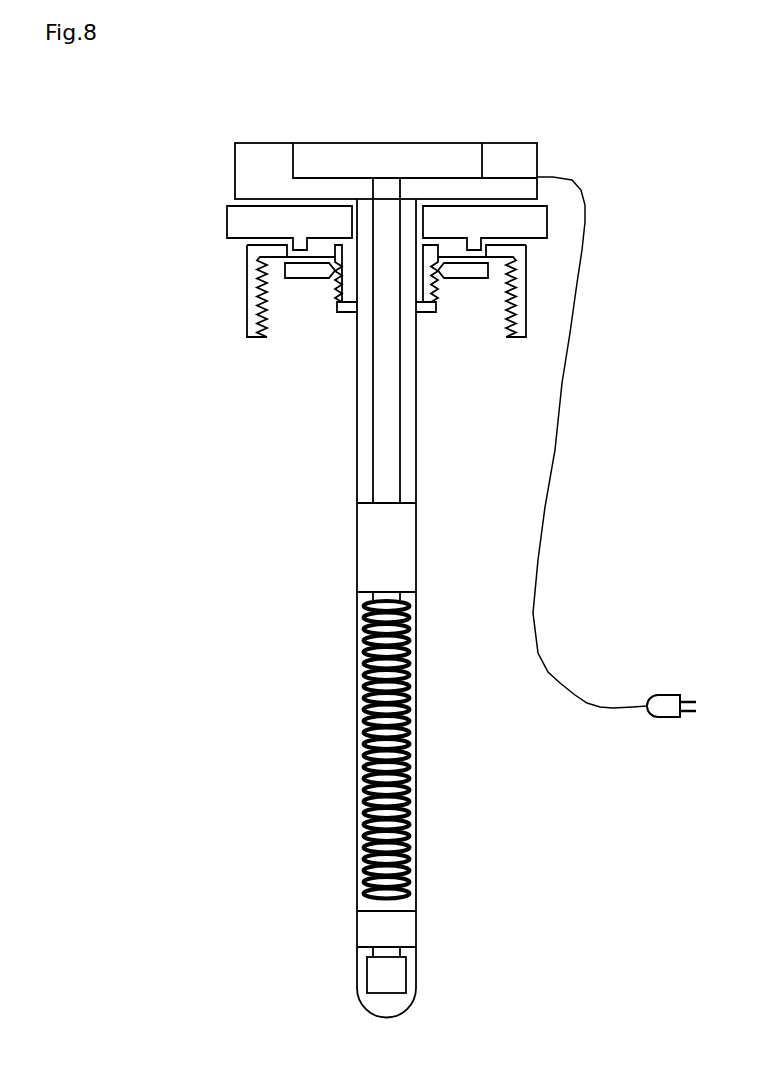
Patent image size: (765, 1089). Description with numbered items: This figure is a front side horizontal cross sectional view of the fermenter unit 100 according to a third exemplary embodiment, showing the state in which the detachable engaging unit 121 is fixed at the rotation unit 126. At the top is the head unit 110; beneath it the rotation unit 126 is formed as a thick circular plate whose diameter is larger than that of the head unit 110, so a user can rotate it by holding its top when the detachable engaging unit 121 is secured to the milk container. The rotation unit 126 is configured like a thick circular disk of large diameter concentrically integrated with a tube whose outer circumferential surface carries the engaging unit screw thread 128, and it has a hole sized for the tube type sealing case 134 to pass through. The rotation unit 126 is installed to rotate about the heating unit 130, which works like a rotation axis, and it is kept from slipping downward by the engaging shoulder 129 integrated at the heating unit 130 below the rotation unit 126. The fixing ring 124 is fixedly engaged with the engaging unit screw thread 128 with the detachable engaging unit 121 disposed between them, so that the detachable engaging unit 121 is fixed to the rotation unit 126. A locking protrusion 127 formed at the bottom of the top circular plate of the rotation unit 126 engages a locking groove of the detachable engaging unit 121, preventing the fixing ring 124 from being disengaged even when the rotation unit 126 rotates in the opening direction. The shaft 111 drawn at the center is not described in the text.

The fermenter unit 100 is at (250, 180).
The head unit 110 is at (502, 160).
The support shaft 111 is at (373, 153).
The detachable engaging unit 121 is at (257, 325).
The fixing ring 124 is at (312, 272).
The rotation unit 126 is at (240, 218).
The locking protrusion 127 is at (473, 240).
The engaging unit screw thread 128 is at (437, 285).
The engaging shoulder 129 is at (348, 312).
The heating unit 130 is at (366, 465).
The tube type sealing case 134 is at (357, 740).